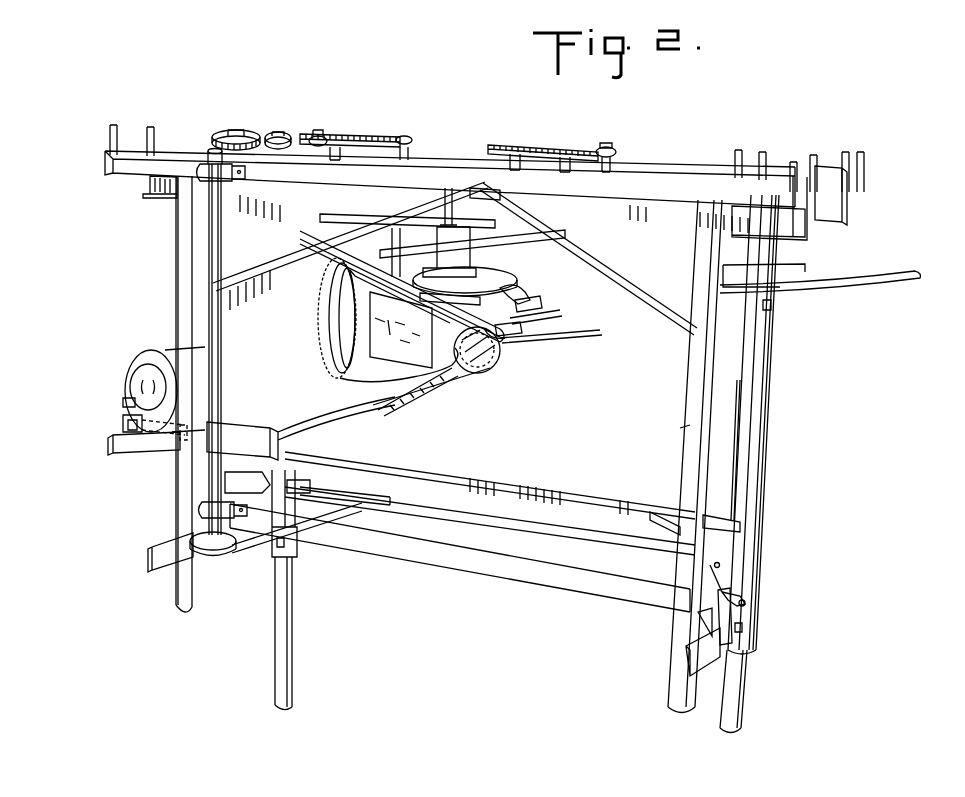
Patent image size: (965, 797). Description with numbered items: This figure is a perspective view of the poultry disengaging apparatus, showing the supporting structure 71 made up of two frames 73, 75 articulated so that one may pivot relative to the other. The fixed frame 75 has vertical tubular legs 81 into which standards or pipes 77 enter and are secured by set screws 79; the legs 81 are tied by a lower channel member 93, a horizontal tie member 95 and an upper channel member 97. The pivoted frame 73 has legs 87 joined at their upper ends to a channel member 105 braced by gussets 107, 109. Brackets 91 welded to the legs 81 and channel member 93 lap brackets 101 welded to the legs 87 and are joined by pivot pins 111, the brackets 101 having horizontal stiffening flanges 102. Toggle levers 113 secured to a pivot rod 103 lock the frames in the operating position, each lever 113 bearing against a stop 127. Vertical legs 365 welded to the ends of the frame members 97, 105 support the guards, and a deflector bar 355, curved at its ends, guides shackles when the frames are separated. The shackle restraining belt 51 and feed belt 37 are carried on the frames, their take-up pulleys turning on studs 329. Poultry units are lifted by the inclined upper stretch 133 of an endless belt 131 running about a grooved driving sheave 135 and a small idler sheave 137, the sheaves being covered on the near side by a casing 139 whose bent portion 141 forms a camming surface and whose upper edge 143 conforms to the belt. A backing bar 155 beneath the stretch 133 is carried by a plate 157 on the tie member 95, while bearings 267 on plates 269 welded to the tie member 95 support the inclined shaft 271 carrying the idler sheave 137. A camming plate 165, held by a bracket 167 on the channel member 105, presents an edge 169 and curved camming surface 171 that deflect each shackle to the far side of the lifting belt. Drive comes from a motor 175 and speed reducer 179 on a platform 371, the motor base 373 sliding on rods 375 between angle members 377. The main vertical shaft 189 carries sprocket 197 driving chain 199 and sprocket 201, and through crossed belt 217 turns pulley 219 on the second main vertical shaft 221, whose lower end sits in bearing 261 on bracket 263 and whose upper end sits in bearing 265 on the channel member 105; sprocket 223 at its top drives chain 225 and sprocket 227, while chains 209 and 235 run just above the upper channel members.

The gusset 109 is at (652, 220).
The vertical leg 365 is at (148, 128).
The sprocket 223 is at (207, 150).
The second main vertical shaft 221 is at (221, 380).
The bearing 265 is at (228, 180).
The chain 225 is at (235, 131).
The sprocket 227 is at (283, 133).
The driven sprocket 201 is at (322, 130).
The chain drive 199 is at (368, 133).
The sprocket 197 is at (411, 140).
The chain 235 is at (515, 145).
The chain 209 is at (600, 145).
The channel member 105 is at (448, 188).
The upper channel member 97 is at (830, 165).
The upper edge 143 is at (318, 240).
The horizontal tie member 95 is at (645, 320).
The gusset 107 is at (265, 250).
The endless belt 51 is at (384, 216).
The stud 329 is at (488, 194).
The belt 37 is at (548, 243).
The bracket 167 is at (437, 253).
The edge 169 is at (485, 270).
The camming plate 165 is at (465, 293).
The curved camming surface 171 is at (522, 286).
The bearing 267 is at (540, 300).
The plate 269 is at (556, 312).
The shaft 271 is at (548, 316).
The upper stretch 133 is at (383, 260).
The backing bar 155 is at (322, 285).
The grooved driving sheave 135 is at (330, 360).
The plate 157 is at (370, 320).
The casing portion 141 is at (440, 390).
The endless belt 131 is at (500, 357).
The idler sheave 137 is at (495, 360).
The casing 139 is at (410, 403).
The main vertical shaft 189 is at (395, 440).
The leg 87 is at (176, 313).
The frame 73 is at (679, 434).
The frame 75 is at (788, 372).
The vertical tubular leg 81 is at (770, 413).
The standard 77 is at (292, 615).
The set screw 79 is at (773, 306).
The deflector bar 355 is at (895, 285).
The motor 175 is at (126, 372).
The angle member 377 is at (122, 416).
The rod 375 is at (123, 420).
The motor base 373 is at (125, 433).
The platform 371 is at (118, 448).
The speed reducer 179 is at (238, 432).
The channel member 93 is at (562, 488).
The pivot rod 103 is at (485, 570).
The crossed belt 217 is at (370, 515).
The bracket 91 is at (320, 498).
The bracket 263 is at (227, 482).
The bearing 261 is at (200, 512).
The pulley 219 is at (220, 555).
The lever 113 is at (160, 545).
The stop 127 is at (700, 628).
The horizontal stiffening flange 102 is at (735, 530).
The pivot pin 111 is at (740, 592).
The bracket 101 is at (748, 603).
The supporting structure 71 is at (820, 474).